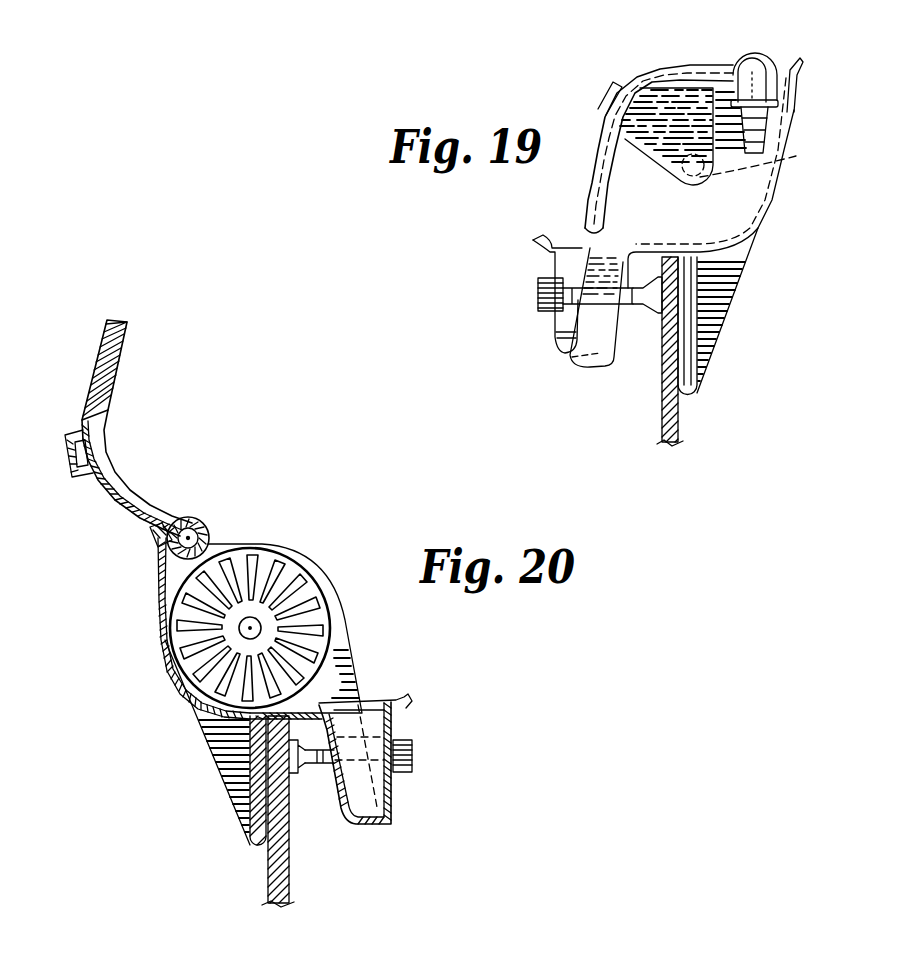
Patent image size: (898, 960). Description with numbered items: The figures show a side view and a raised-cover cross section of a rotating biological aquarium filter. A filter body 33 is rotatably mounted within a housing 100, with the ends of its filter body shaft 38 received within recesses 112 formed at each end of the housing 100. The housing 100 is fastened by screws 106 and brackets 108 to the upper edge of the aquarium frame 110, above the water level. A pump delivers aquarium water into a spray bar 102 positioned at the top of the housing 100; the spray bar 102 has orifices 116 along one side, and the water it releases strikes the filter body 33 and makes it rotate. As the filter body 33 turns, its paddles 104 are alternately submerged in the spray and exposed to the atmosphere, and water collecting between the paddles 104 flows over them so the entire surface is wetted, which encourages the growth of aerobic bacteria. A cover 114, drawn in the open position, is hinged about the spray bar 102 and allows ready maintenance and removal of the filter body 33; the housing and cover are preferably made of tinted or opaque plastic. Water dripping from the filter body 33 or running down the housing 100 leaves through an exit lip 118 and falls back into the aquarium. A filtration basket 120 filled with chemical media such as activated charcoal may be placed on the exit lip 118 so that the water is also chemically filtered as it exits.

In FIG. 20, the filter body 33 is at (270, 550).
In FIG. 19, the filter body shaft 38 is at (796, 156).
In FIG. 20, the filter body shaft 38 is at (256, 629).
In FIG. 19, the housing 100 is at (737, 212).
In FIG. 20, the housing 100 is at (200, 700).
In FIG. 19, the spray bar 102 is at (772, 62).
In FIG. 20, the spray bar 102 is at (190, 518).
In FIG. 20, the paddles 104 is at (160, 643).
In FIG. 19, the screws 106 is at (548, 312).
In FIG. 20, the screws 106 is at (412, 758).
In FIG. 19, the brackets 108 is at (692, 328).
In FIG. 20, the brackets 108 is at (250, 797).
In FIG. 19, the aquarium frame 110 is at (673, 419).
In FIG. 20, the aquarium frame 110 is at (291, 877).
In FIG. 19, the recesses 112 is at (668, 162).
In FIG. 19, the cover 114 is at (652, 78).
In FIG. 20, the cover 114 is at (108, 364).
In FIG. 20, the orifices 116 is at (160, 568).
In FIG. 19, the exit lip 118 is at (585, 370).
In FIG. 20, the exit lip 118 is at (368, 829).
In FIG. 19, the filtration basket 120 is at (552, 260).
In FIG. 20, the filtration basket 120 is at (406, 707).